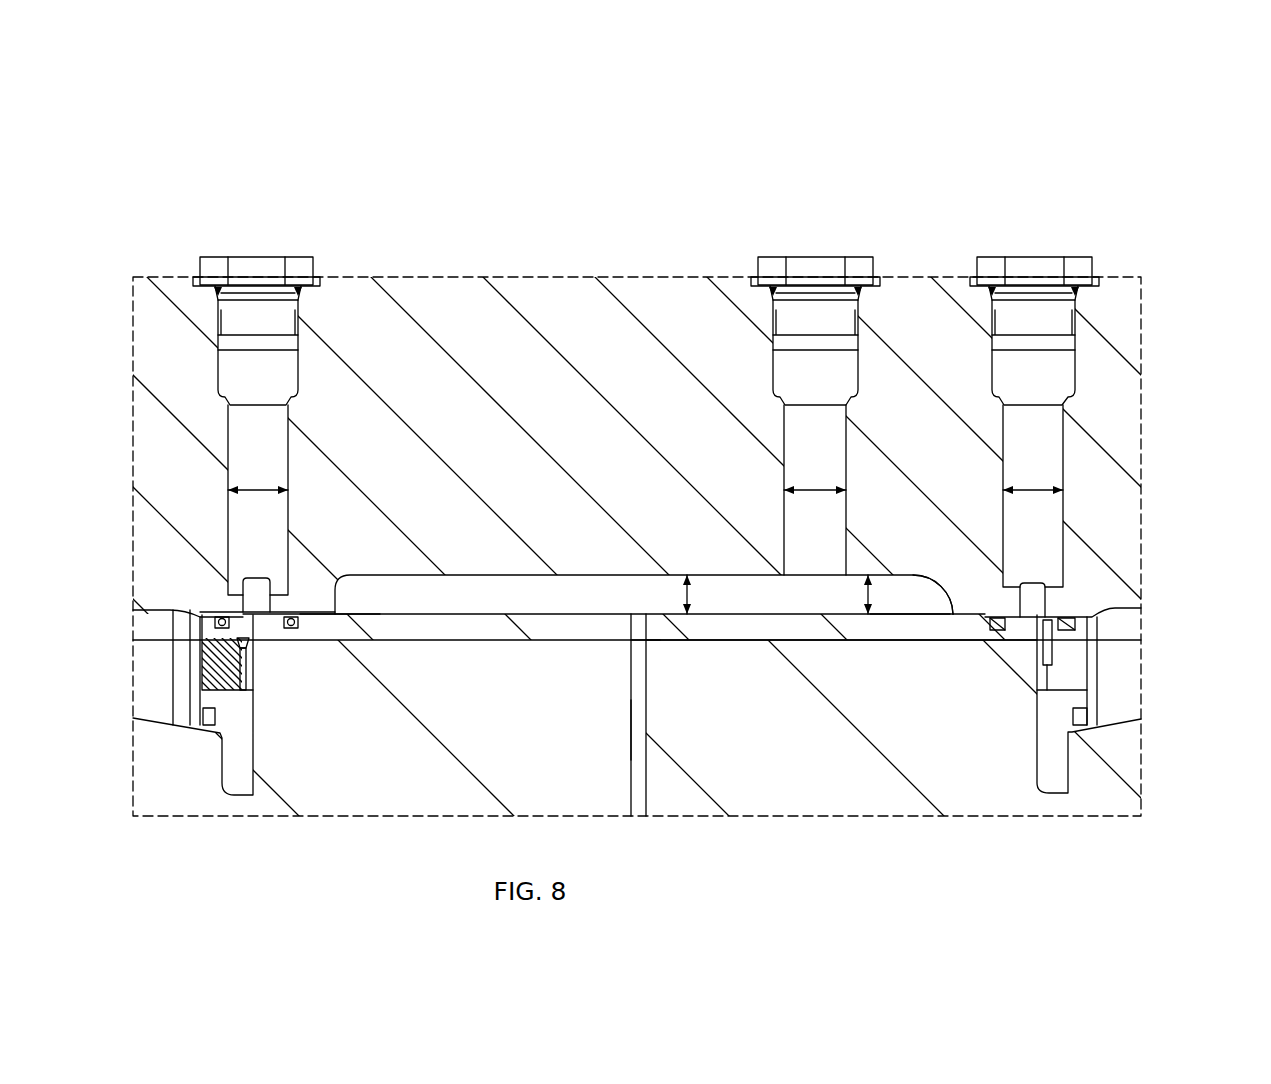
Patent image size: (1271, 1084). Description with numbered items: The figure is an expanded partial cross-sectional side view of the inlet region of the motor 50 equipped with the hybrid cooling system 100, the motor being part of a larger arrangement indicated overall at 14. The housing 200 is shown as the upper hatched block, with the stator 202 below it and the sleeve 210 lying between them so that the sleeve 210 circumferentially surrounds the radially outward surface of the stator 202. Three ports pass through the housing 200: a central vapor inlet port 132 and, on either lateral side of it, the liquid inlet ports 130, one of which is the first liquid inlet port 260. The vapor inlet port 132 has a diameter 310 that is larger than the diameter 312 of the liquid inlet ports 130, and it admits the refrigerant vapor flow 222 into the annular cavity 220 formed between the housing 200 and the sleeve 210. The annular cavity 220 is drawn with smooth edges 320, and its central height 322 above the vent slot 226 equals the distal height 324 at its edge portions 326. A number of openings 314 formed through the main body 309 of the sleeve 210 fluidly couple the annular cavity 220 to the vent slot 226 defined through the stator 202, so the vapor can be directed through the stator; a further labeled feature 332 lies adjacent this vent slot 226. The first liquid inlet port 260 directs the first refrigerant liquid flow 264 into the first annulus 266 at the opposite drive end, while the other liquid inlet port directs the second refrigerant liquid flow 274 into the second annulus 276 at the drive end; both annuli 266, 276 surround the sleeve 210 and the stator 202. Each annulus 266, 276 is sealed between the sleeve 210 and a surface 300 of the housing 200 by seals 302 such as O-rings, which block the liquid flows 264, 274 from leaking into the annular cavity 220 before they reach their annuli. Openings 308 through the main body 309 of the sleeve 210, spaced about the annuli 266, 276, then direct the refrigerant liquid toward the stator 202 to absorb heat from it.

The vehicle 14 is at (1175, 118).
The motor 50 is at (1085, 168).
The hybrid cooling system 100 is at (850, 175).
The liquid inlet ports 130 is at (1077, 254).
The vapor inlet port 132 is at (800, 258).
The housing 200 is at (158, 338).
The stator 202 is at (815, 790).
The sleeve 210 is at (793, 625).
The annular cavity 220 is at (725, 590).
The refrigerant vapor flow 222 is at (788, 384).
The vent slot 226 is at (648, 798).
The first liquid inlet port 260 is at (299, 254).
The first refrigerant liquid flow 264 is at (558, 402).
The first annulus 266 is at (262, 590).
The second refrigerant liquid flow 274 is at (1079, 405).
The second annulus 276 is at (1040, 605).
The surface of the housing 300 is at (336, 607).
The seals 302 is at (218, 626).
The openings 308 is at (240, 650).
The main body 309 is at (850, 625).
The diameter 310 is at (812, 480).
The diameter 312 is at (255, 480).
The openings 314 is at (650, 640).
The smooth edges 320 is at (930, 595).
The central height 322 is at (683, 598).
The distal height 324 is at (864, 598).
The edge portions 326 is at (336, 622).
The split gap 332 is at (625, 757).